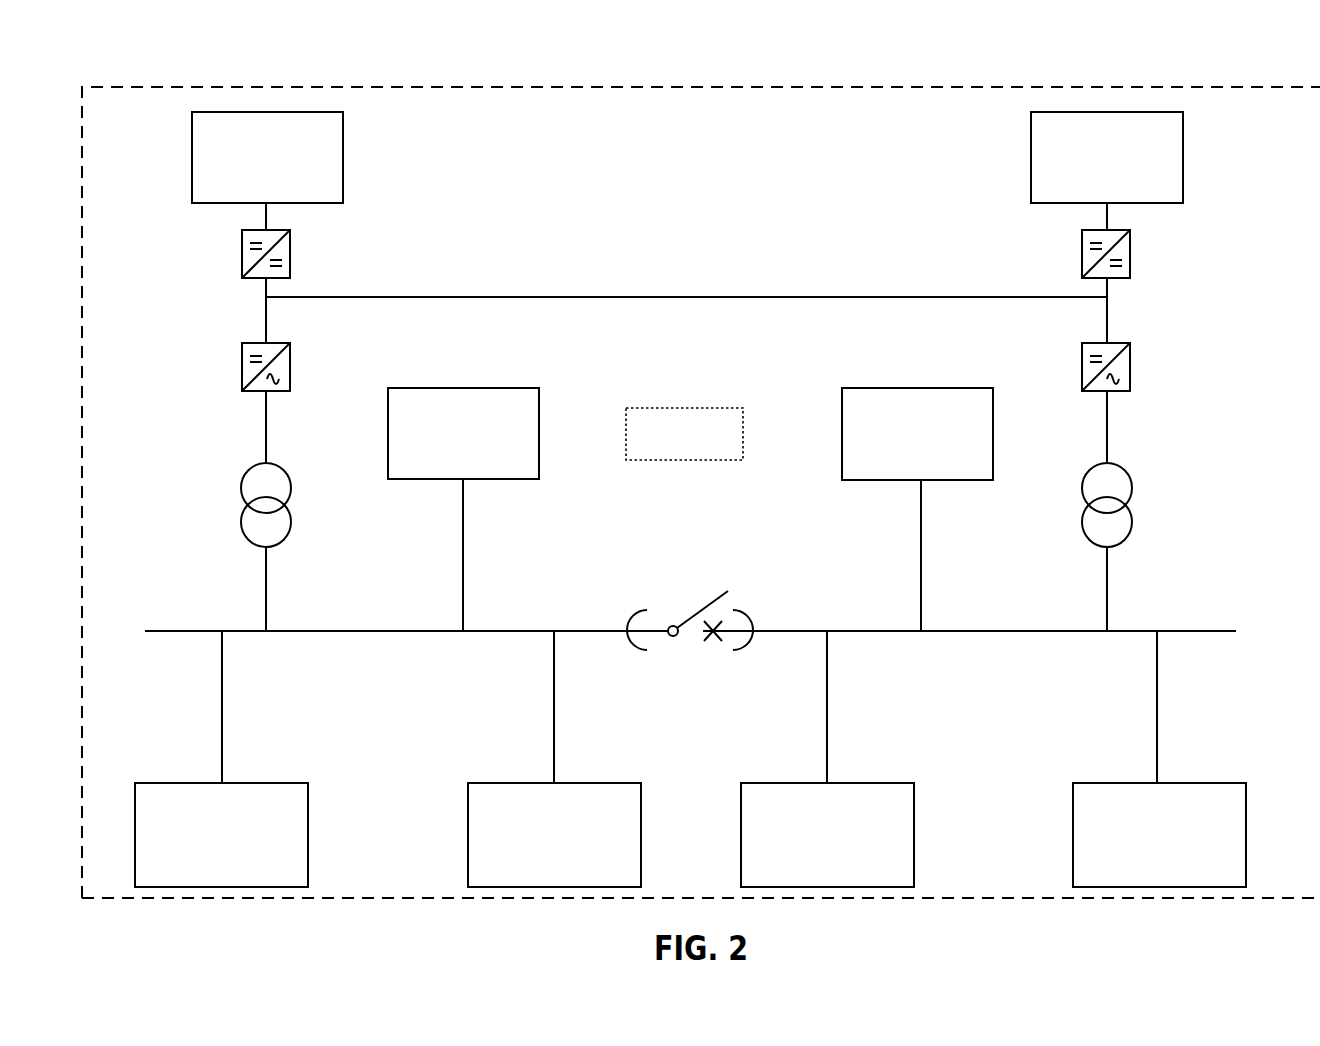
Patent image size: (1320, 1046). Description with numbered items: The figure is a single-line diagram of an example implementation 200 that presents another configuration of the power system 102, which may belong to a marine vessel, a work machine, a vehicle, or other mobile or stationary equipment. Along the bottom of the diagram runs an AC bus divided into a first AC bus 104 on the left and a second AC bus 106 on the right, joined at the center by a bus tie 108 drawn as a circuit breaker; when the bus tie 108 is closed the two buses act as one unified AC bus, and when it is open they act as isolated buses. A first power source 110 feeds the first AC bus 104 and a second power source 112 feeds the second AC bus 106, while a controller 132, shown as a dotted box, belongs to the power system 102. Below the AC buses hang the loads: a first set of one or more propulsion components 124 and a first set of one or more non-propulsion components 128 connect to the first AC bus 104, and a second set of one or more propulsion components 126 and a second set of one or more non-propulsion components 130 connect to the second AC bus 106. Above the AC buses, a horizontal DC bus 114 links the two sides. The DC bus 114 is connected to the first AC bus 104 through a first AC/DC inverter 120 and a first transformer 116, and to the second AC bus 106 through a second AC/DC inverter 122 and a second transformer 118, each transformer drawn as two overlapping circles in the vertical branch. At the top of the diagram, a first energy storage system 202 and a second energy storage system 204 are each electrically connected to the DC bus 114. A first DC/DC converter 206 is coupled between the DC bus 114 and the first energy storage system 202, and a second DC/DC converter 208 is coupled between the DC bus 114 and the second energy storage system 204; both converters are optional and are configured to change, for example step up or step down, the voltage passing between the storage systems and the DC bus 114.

The implementation 200 is at (214, 65).
The power system 102 is at (683, 119).
The first AC bus 104 is at (374, 633).
The second AC bus 106 is at (1008, 633).
The bus tie 108 is at (675, 606).
The first power source 110 is at (444, 444).
The second power source 112 is at (898, 444).
The DC bus 114 is at (517, 297).
The first transformer 116 is at (242, 515).
The second transformer 118 is at (1133, 518).
The first AC/DC inverter 120 is at (242, 366).
The second AC/DC inverter 122 is at (1131, 375).
The first set of one or more propulsion components 124 is at (535, 844).
The second set of one or more propulsion components 126 is at (808, 844).
The first set of one or more non-propulsion components 128 is at (202, 844).
The second set of one or more non-propulsion components 130 is at (1140, 844).
The controller 132 is at (666, 444).
The first energy storage system 202 is at (248, 167).
The second energy storage system 204 is at (1088, 167).
The first DC/DC converter 206 is at (242, 252).
The second DC/DC converter 208 is at (1131, 253).